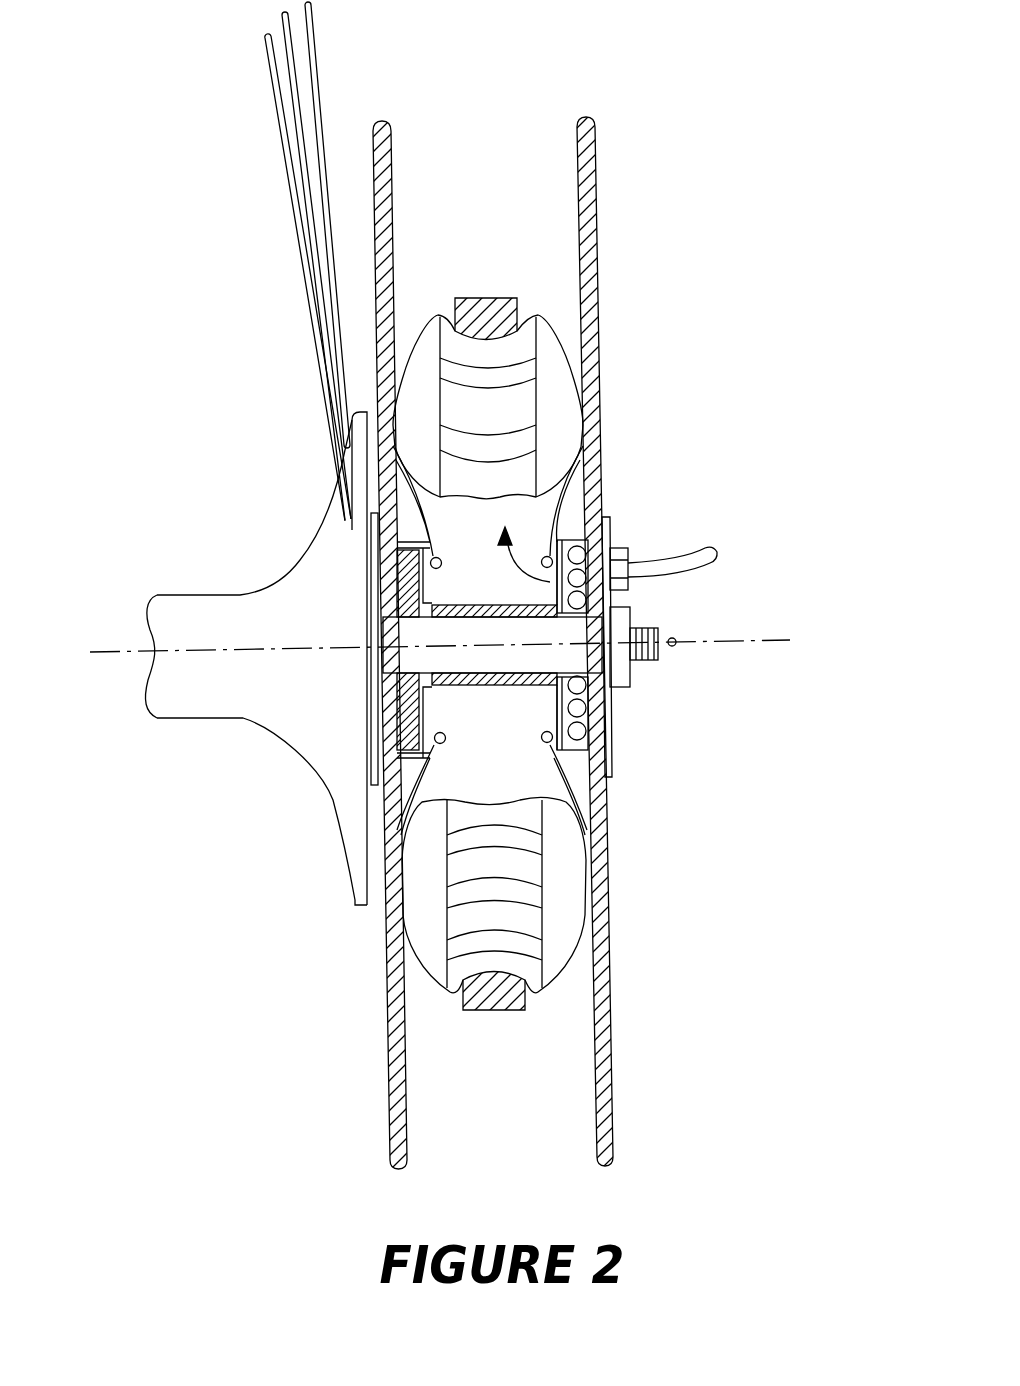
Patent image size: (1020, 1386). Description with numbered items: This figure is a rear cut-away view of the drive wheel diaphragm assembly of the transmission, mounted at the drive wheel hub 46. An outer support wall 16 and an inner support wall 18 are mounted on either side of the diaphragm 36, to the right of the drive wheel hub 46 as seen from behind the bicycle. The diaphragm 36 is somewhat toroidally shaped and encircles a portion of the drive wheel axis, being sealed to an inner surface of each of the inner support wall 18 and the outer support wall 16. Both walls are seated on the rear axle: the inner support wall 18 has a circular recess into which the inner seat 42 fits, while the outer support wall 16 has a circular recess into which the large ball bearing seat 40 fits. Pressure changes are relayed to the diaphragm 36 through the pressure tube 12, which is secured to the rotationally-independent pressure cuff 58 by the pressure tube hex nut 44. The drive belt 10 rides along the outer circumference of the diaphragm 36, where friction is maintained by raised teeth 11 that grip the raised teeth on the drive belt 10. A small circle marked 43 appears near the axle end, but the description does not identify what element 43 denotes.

The drive belt 10 is at (467, 296).
The raised teeth 11 is at (537, 437).
The pressure tube 12 is at (703, 575).
The outer support wall 16 is at (610, 1052).
The inner support wall 18 is at (390, 1062).
The diaphragm 36 is at (554, 323).
The large ball bearing seat 40 is at (612, 747).
The inner seat 42 is at (398, 715).
The axle 43 is at (676, 645).
The pressure tube hex nut 44 is at (628, 548).
The drive wheel hub 46 is at (293, 568).
The pressure cuff 58 is at (613, 700).